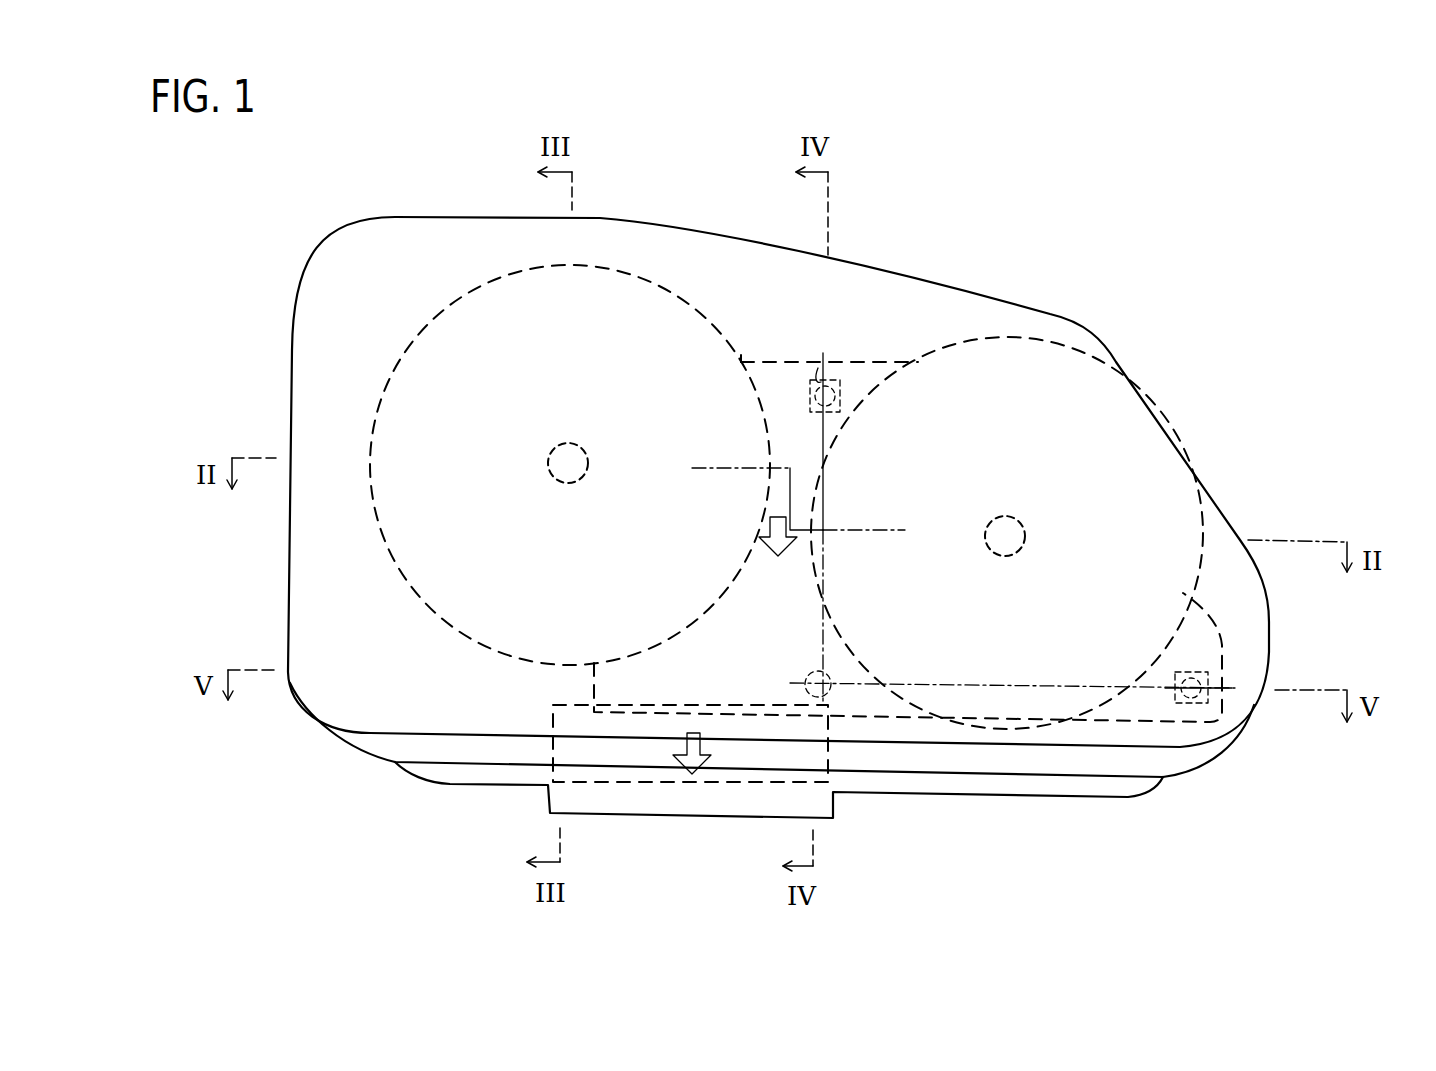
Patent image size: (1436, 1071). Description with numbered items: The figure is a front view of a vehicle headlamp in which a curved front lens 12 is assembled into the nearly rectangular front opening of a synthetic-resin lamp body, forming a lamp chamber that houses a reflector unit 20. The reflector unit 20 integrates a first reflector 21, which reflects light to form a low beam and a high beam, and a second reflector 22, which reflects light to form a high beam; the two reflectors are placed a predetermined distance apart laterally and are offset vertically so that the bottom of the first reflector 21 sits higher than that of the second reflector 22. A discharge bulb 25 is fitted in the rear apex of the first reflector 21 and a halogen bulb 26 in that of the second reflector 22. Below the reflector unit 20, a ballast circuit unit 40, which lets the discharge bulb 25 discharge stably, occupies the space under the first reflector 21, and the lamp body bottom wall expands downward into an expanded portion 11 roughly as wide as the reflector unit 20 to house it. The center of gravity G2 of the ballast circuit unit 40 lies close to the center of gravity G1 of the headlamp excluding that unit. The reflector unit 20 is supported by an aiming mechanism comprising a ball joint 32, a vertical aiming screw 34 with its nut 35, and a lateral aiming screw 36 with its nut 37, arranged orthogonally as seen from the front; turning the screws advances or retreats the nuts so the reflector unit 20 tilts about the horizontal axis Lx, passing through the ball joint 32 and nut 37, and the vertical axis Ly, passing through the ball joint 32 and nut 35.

The expanded portion 11 is at (488, 788).
The front lens 12 is at (428, 257).
The reflector unit 20 is at (775, 358).
The first reflector 21 is at (397, 354).
The second reflector 22 is at (1172, 446).
The discharge bulb 25 is at (547, 462).
The halogen bulb 26 is at (1026, 542).
The ball joint 32 is at (830, 693).
The vertical aiming screw 34 is at (848, 380).
The nut 35 is at (818, 368).
The lateral aiming screw 36 is at (1184, 660).
The nut 37 is at (1212, 682).
The ballast circuit unit 40 is at (648, 786).
The center of gravity of the headlamp excluding the ballast circuit unit G1 is at (767, 520).
The center of gravity of the ballast circuit unit G2 is at (685, 735).
The horizontal axis Lx is at (1083, 690).
The vertical axis Ly is at (823, 490).